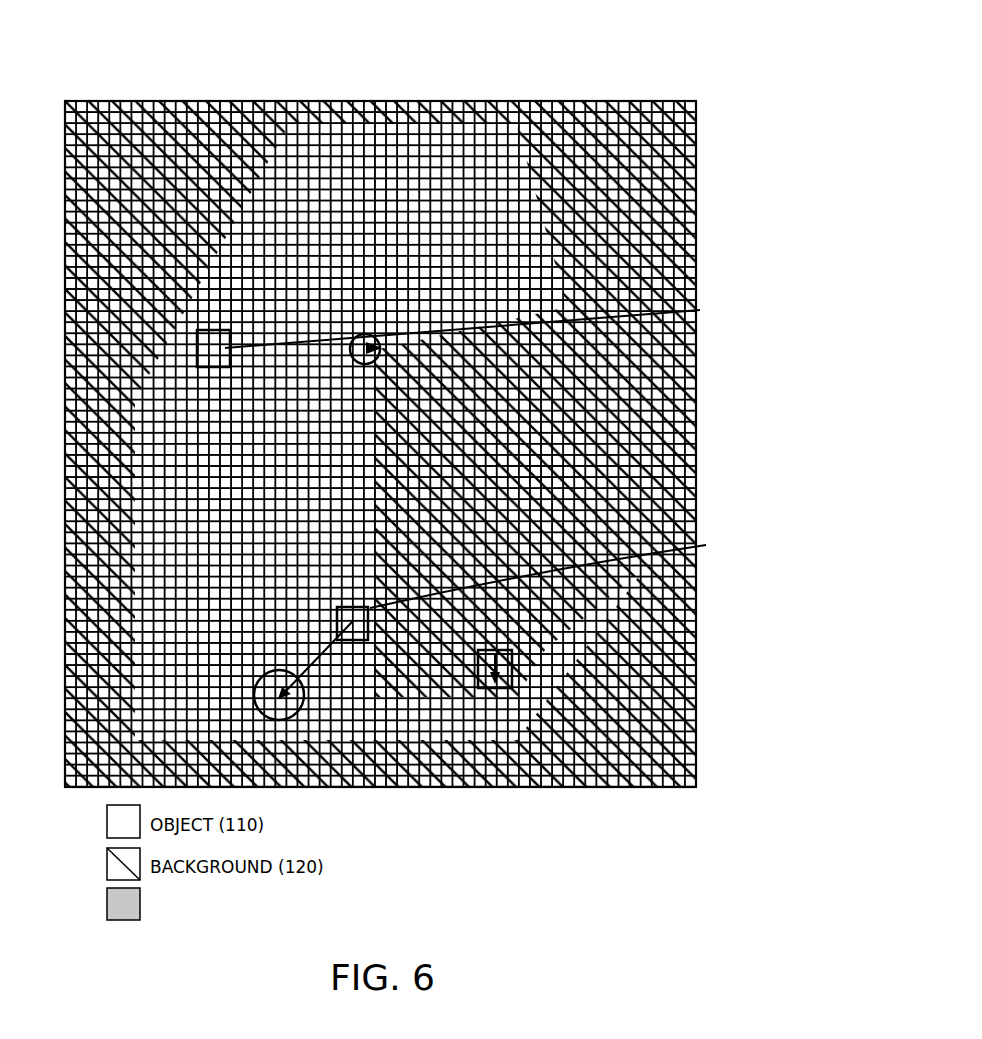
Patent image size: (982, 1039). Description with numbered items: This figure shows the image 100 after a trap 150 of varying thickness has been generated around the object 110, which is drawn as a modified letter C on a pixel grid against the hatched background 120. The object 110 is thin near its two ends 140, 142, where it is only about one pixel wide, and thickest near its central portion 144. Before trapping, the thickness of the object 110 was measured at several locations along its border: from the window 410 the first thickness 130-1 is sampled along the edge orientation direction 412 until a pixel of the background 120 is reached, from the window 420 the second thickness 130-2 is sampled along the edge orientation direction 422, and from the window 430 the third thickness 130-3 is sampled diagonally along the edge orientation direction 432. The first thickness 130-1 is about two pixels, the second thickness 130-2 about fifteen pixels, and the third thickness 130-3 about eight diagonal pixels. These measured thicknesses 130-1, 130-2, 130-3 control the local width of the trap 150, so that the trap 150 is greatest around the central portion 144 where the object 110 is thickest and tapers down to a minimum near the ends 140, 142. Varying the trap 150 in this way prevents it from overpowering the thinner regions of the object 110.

The image 100 is at (545, 66).
The object 110 is at (380, 444).
The background 120 is at (382, 444).
The first thickness 130-1 is at (500, 667).
The second thickness 130-2 is at (267, 348).
The third thickness 130-3 is at (320, 653).
The end of the object 140 is at (648, 608).
The end of the object 142 is at (548, 375).
The central portion 144 is at (112, 501).
The trap 150 is at (176, 904).
The window 410 is at (503, 690).
The edge orientation direction 412 is at (505, 676).
The window 420 is at (212, 330).
The edge orientation direction 422 is at (481, 326).
The window 430 is at (554, 572).
The edge orientation direction 432 is at (278, 720).